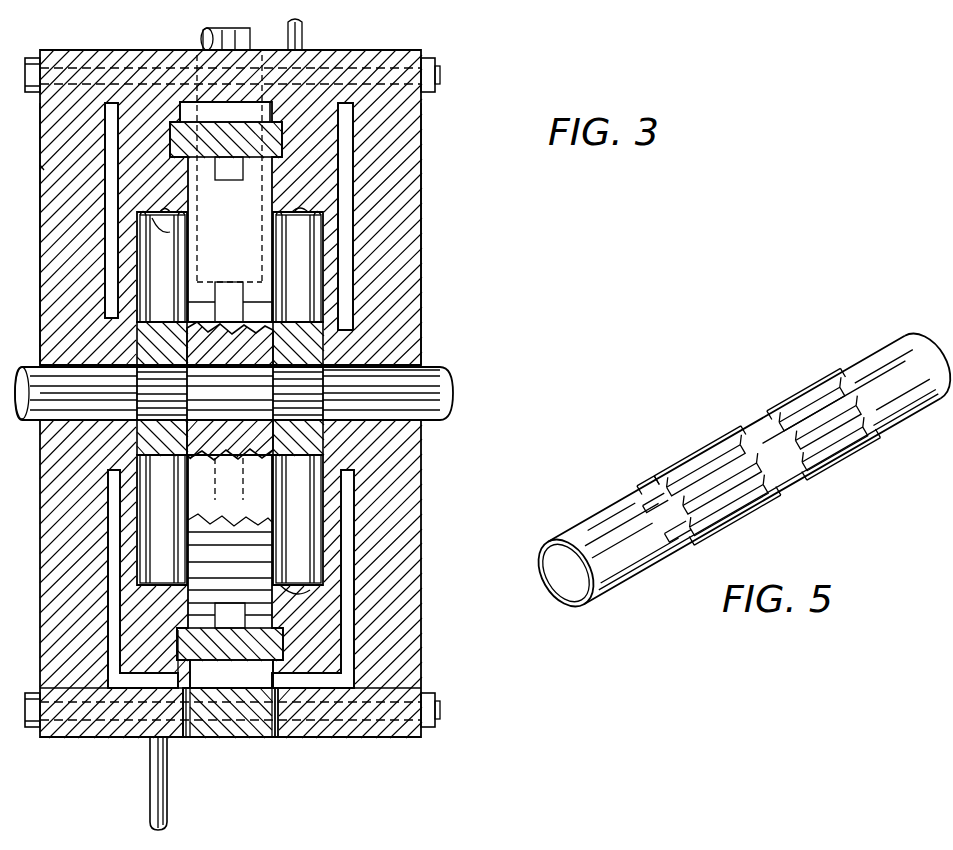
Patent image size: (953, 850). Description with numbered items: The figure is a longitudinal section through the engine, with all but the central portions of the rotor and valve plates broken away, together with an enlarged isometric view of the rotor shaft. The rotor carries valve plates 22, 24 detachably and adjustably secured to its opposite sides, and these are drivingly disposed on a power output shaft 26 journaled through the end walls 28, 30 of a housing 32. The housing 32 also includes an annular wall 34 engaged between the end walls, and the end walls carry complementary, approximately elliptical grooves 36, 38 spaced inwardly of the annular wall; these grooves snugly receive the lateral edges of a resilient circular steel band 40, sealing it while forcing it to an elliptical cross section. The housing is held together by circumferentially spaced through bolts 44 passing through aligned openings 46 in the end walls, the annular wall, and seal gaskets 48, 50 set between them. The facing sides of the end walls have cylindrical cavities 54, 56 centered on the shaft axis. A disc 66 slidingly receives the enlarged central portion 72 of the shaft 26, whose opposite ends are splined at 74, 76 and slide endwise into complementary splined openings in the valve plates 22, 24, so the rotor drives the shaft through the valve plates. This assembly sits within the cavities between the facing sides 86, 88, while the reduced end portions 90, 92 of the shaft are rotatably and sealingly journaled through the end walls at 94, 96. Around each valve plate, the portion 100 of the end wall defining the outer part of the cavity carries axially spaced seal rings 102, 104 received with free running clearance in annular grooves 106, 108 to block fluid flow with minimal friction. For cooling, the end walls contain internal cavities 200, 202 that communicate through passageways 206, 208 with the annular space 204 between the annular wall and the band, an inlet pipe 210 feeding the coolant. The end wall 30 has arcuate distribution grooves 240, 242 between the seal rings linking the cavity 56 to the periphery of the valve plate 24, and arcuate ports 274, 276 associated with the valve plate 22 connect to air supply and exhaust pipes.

In FIG. 3, the valve plate 22 is at (160, 292).
In FIG. 3, the valve plate 24 is at (295, 365).
In FIG. 3, the power output shaft 26 is at (432, 386).
In FIG. 5, the power output shaft 26 is at (872, 365).
In FIG. 3, the end wall 28 is at (78, 737).
In FIG. 3, the end wall 30 is at (422, 650).
In FIG. 3, the housing 32 is at (421, 185).
In FIG. 3, the annular wall 34 is at (236, 737).
In FIG. 3, the groove 36 is at (160, 665).
In FIG. 3, the groove 38 is at (290, 650).
In FIG. 3, the resilient circular steel band 40 is at (224, 632).
In FIG. 3, the through bolt 44 is at (30, 60).
In FIG. 3, the aligned opening 46 is at (390, 717).
In FIG. 3, the seal gasket 48 is at (190, 737).
In FIG. 3, the seal gasket 50 is at (272, 737).
In FIG. 3, the cavity 54 is at (138, 288).
In FIG. 3, the cavity 56 is at (312, 275).
In FIG. 3, the disc 66 is at (270, 520).
In FIG. 3, the enlarged central portion of the shaft 72 is at (250, 392).
In FIG. 5, the enlarged central portion of the shaft 72 is at (745, 428).
In FIG. 3, the splined end 74 is at (140, 355).
In FIG. 5, the splined end 74 is at (672, 470).
In FIG. 3, the splined end 76 is at (312, 390).
In FIG. 5, the splined end 76 is at (793, 386).
In FIG. 3, the facing side of the end wall 86 is at (180, 200).
In FIG. 3, the facing side of the end wall 88 is at (275, 205).
In FIG. 3, the reduced end portion of the shaft 90 is at (62, 405).
In FIG. 5, the reduced end portion of the shaft 90 is at (642, 565).
In FIG. 3, the reduced end portion of the shaft 92 is at (390, 407).
In FIG. 5, the reduced end portion of the shaft 92 is at (905, 400).
In FIG. 3, the journal 94 is at (48, 378).
In FIG. 3, the journal 96 is at (395, 375).
In FIG. 3, the portion of the end wall 100 is at (208, 660).
In FIG. 3, the seal ring 102 is at (187, 587).
In FIG. 3, the seal ring 104 is at (187, 597).
In FIG. 3, the annular groove 106 is at (170, 232).
In FIG. 3, the annular groove 108 is at (175, 207).
In FIG. 3, the internal cavity 200 is at (112, 103).
In FIG. 3, the internal cavity 202 is at (345, 160).
In FIG. 3, the annular space 204 is at (252, 737).
In FIG. 3, the passageway 206 is at (108, 737).
In FIG. 3, the passageway 208 is at (322, 677).
In FIG. 3, the inlet pipe 210 is at (212, 36).
In FIG. 3, the arcuate distribution groove 240 is at (290, 585).
In FIG. 3, the arcuate distribution groove 242 is at (300, 205).
In FIG. 3, the arcuate port 274 is at (157, 207).
In FIG. 3, the arcuate port 276 is at (43, 737).